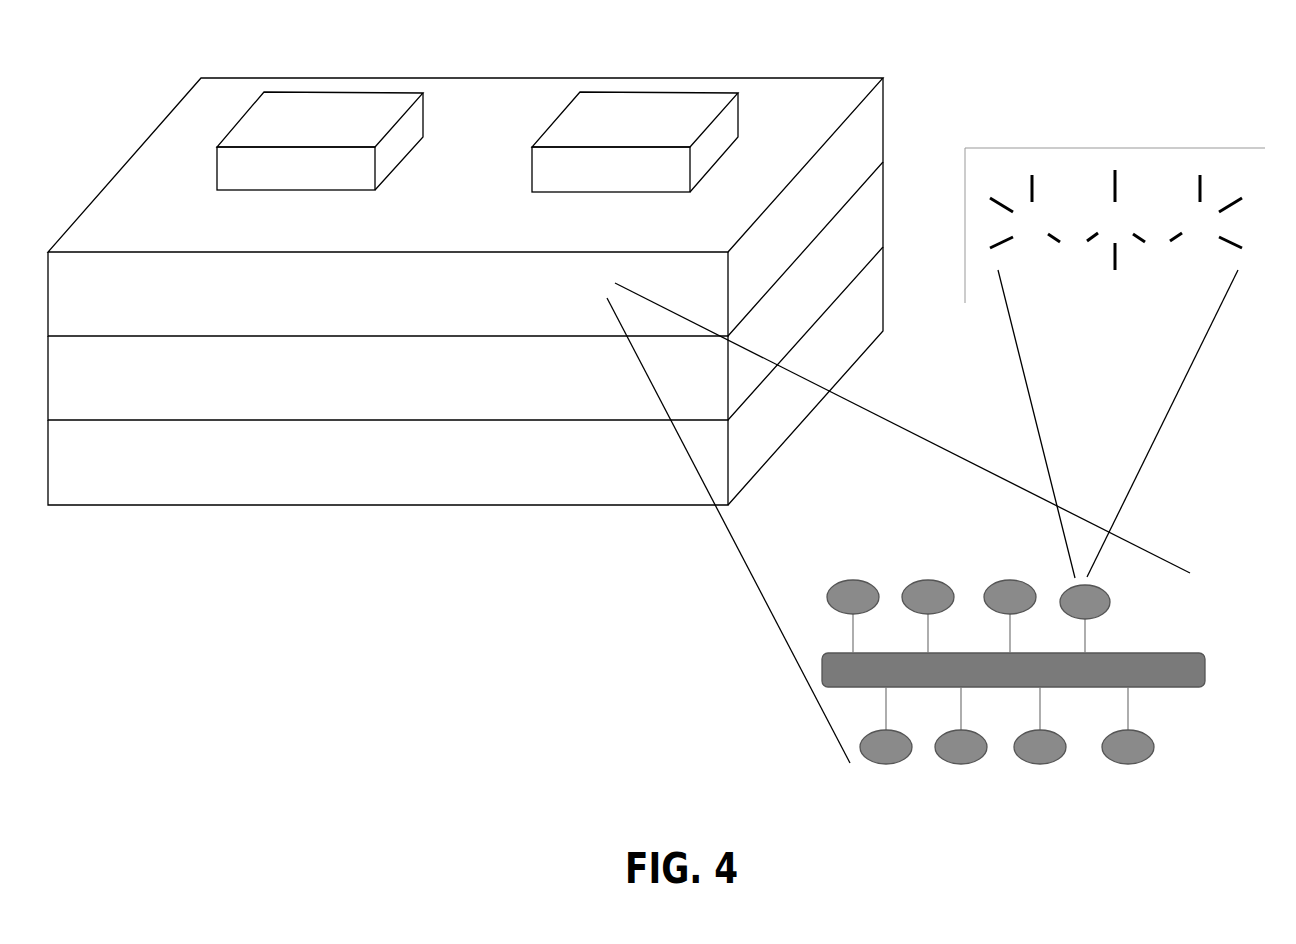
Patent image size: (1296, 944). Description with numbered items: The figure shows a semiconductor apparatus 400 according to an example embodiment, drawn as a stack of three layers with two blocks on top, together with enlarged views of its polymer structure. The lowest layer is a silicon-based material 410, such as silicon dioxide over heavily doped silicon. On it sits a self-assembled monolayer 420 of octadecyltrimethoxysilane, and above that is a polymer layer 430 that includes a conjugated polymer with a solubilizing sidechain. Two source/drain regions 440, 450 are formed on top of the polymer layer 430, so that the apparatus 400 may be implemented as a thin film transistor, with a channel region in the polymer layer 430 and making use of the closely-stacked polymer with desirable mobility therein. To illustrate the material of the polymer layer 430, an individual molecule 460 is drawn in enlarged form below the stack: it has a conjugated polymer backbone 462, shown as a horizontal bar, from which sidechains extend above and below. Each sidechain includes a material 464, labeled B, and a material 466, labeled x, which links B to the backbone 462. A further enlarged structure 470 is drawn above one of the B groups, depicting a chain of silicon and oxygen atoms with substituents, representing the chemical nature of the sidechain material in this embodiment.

The semiconductor apparatus 400 is at (1011, 46).
The silicon-based material 410 is at (880, 297).
The self-assembled monolayer 420 is at (880, 217).
The polymer layer 430 is at (880, 122).
The source/drain region 440 is at (364, 95).
The source/drain region 450 is at (667, 97).
The individual molecule 460 is at (952, 527).
The conjugated polymer backbone 462 is at (1145, 653).
The sidechain material (B) 464 is at (1093, 588).
The sidechain material (x) 466 is at (1098, 632).
The siloxane group 470 is at (1171, 141).